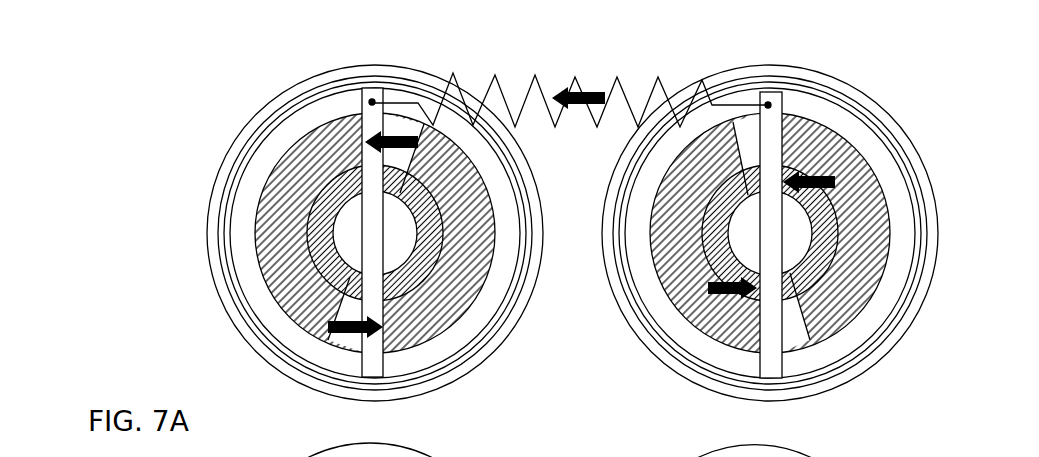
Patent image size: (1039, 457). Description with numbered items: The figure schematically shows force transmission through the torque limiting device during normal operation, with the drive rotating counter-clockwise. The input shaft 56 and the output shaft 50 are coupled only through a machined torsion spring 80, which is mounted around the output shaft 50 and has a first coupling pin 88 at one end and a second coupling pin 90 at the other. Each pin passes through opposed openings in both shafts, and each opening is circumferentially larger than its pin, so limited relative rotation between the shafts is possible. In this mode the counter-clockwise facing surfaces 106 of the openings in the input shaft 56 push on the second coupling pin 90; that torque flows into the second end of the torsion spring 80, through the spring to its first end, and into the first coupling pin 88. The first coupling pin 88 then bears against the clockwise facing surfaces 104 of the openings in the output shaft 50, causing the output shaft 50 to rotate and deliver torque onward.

The output shaft 50 is at (282, 165).
The input shaft 56 is at (263, 260).
The torsion spring 80 is at (617, 75).
The first coupling pin 88 is at (375, 360).
The second coupling pin 90 is at (783, 362).
The clockwise facing surfaces 104 is at (337, 113).
The counter-clockwise facing surfaces 106 is at (703, 340).